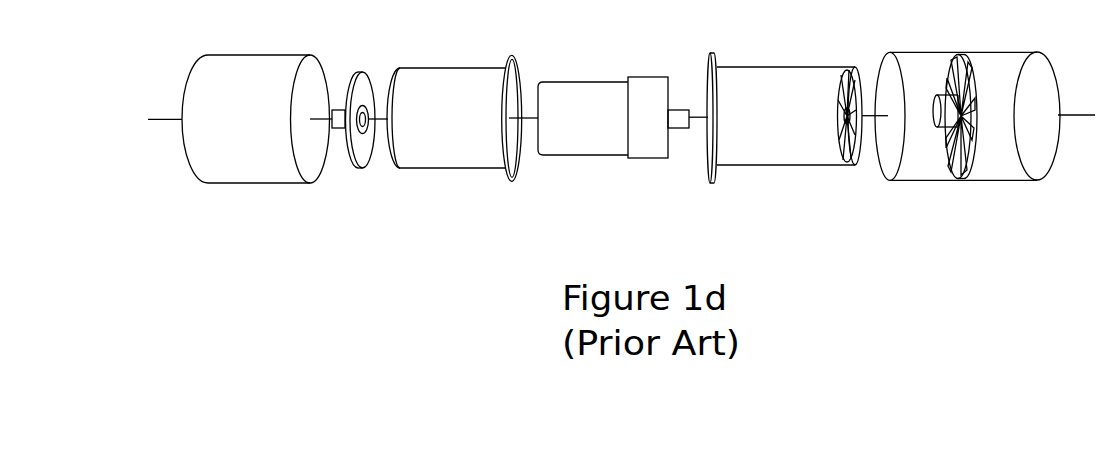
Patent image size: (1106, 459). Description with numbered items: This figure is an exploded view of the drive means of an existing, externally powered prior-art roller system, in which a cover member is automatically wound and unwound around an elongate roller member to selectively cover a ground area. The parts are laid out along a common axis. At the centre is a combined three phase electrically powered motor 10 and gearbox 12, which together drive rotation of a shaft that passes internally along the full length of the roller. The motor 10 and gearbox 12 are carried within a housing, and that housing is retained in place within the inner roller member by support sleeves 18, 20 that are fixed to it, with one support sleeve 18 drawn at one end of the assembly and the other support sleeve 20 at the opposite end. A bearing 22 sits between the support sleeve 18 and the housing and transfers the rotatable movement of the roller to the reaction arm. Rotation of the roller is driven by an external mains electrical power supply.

The motor 10 is at (592, 137).
The gearbox 12 is at (656, 138).
The housing 18 is at (243, 153).
The fan housing 20 is at (923, 150).
The coupling disc 22 is at (362, 157).